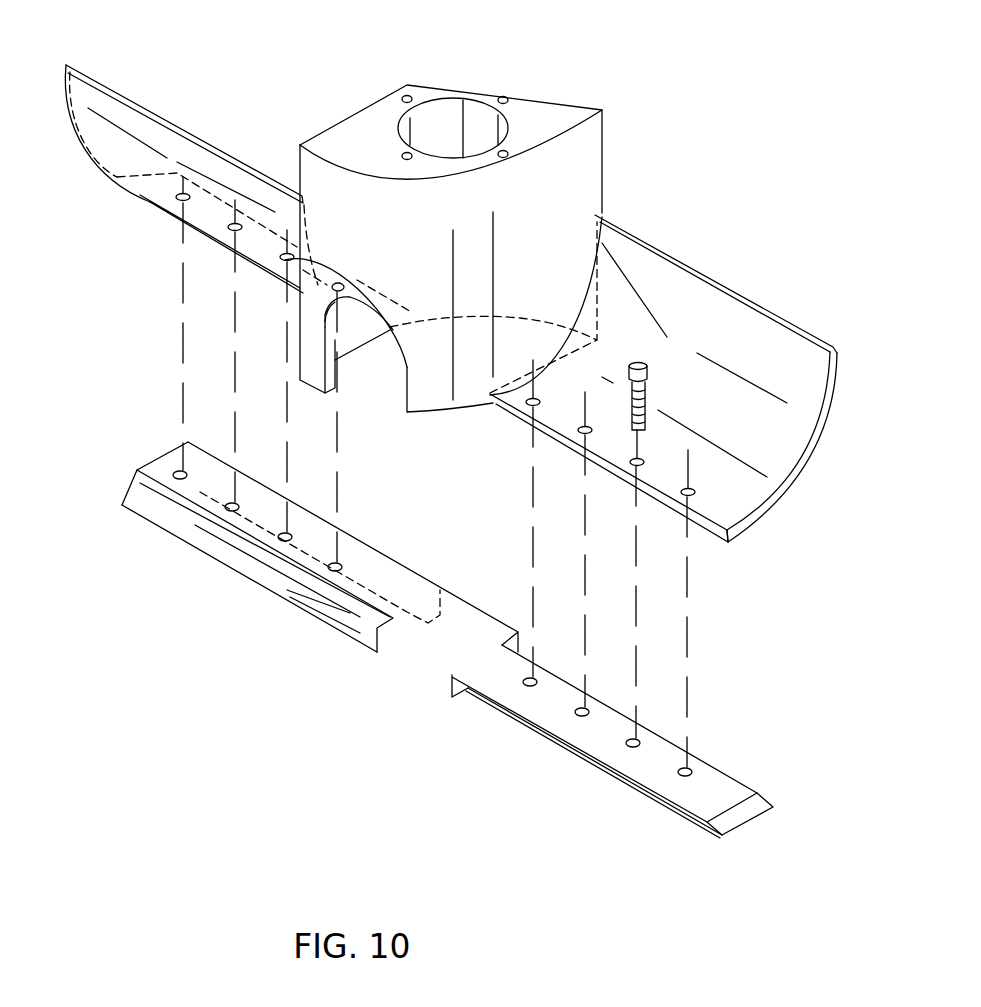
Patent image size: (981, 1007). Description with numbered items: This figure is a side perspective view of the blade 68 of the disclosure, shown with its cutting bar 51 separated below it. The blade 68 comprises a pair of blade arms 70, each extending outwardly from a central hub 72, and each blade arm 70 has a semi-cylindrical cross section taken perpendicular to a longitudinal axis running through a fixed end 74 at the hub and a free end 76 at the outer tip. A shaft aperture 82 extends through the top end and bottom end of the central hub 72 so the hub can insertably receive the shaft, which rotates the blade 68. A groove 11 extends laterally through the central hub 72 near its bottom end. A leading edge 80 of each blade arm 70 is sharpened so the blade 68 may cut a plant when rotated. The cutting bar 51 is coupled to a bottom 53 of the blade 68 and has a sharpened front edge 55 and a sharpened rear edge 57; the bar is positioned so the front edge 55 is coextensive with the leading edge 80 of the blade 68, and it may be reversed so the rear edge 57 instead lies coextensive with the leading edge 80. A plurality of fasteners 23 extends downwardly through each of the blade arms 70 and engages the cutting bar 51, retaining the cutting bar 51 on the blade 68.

The groove 11 is at (285, 260).
The fasteners 23 is at (637, 362).
The cutting bar 51 is at (302, 628).
The bottom 53 is at (703, 537).
The front edge 55 is at (377, 549).
The rear edge 57 is at (210, 557).
The blade 68 is at (238, 148).
The blade arms 70 is at (123, 95).
The central hub 72 is at (592, 110).
The fixed end 74 is at (597, 215).
The free end 76 is at (847, 423).
The leading edge 80 is at (657, 498).
The shaft aperture 82 is at (446, 96).